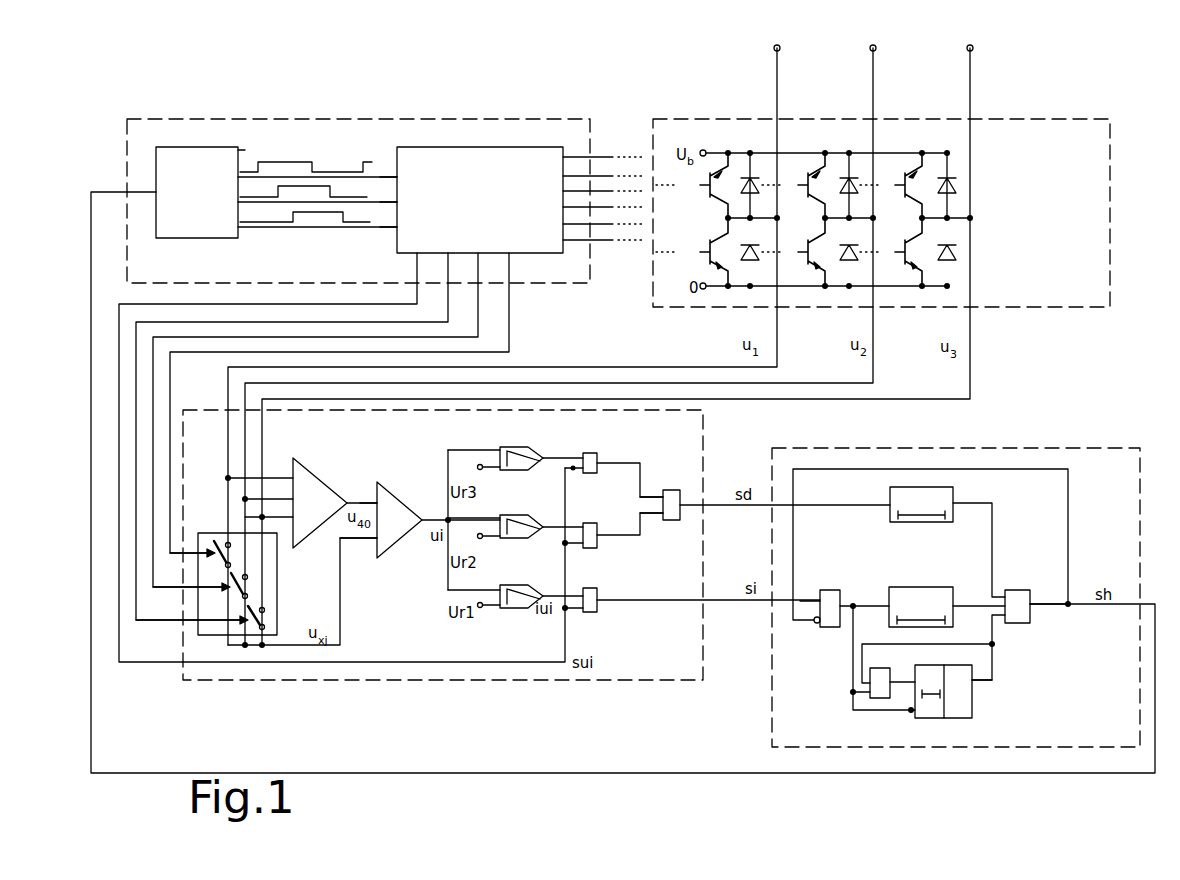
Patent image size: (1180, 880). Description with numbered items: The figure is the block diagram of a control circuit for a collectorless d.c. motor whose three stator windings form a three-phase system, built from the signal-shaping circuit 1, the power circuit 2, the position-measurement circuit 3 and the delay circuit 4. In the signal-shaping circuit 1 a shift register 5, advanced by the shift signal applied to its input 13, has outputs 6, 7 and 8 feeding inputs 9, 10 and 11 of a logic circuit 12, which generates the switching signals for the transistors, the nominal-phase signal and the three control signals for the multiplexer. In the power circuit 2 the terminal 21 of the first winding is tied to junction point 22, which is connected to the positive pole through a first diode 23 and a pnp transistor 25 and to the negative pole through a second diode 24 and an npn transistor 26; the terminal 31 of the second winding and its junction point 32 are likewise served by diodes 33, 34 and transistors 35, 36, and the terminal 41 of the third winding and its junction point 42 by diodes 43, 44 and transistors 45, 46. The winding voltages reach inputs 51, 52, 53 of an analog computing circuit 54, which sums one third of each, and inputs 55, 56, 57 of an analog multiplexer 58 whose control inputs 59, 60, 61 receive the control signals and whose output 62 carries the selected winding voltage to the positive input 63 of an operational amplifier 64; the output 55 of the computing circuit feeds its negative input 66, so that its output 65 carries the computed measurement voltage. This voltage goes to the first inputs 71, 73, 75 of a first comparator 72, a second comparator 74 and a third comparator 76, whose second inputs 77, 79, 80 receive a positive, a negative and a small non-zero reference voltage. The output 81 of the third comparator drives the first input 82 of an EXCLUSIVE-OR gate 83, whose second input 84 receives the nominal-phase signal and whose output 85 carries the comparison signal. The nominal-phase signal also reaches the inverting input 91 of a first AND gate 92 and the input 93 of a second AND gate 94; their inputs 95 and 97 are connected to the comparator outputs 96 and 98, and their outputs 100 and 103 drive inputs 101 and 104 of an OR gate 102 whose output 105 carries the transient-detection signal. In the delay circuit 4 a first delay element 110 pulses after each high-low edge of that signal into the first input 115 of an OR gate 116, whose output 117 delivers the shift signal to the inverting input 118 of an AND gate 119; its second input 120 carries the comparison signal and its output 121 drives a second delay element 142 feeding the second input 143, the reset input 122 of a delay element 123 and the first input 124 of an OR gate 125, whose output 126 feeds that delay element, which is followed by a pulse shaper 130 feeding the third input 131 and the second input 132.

The signal-shaping circuit 1 is at (590, 119).
The power circuit 2 is at (1110, 119).
The position-measurement circuit 3 is at (703, 410).
The delay circuit 4 is at (1140, 448).
The shift register 5 is at (238, 150).
The output of shift register 6 is at (240, 176).
The output of shift register 7 is at (240, 201).
The output of shift register 8 is at (240, 226).
The input of logic circuit 9 is at (388, 177).
The input of logic circuit 10 is at (388, 202).
The input of logic circuit 11 is at (388, 227).
The logic circuit 12 is at (540, 147).
The input of shift register 13 is at (156, 192).
The terminal of first winding 21 is at (780, 48).
The junction point 22 is at (753, 208).
The first diode 23 is at (760, 185).
The second diode 24 is at (759, 255).
The pnp transistor 25 is at (710, 194).
The npn transistor 26 is at (710, 262).
The terminal of second winding 31 is at (876, 48).
The junction point 32 is at (850, 208).
The diode 33 is at (858, 185).
The diode 34 is at (858, 255).
The pnp transistor 35 is at (808, 194).
The npn transistor 36 is at (803, 286).
The terminal of third winding 41 is at (973, 48).
The center tap 42 is at (948, 228).
The diode 43 is at (956, 185).
The diode 44 is at (956, 255).
The pnp transistor 45 is at (906, 176).
The npn transistor 46 is at (905, 243).
The input of analog computing circuit 51 is at (286, 478).
The input of analog computing circuit 52 is at (286, 499).
The input of analog computing circuit 53 is at (286, 517).
The analog computing circuit 54 is at (308, 470).
The output of analog computing circuit 55 is at (352, 503).
The input of analog multiplexer 56 is at (245, 517).
The input of analog multiplexer 57 is at (277, 560).
The analog multiplexer 58 is at (277, 590).
The input of analog multiplexer 59 is at (190, 553).
The input of analog multiplexer 60 is at (190, 587).
The input of analog multiplexer 61 is at (190, 620).
The output of analog multiplexer 62 is at (277, 618).
The positive input of operational amplifier 63 is at (360, 545).
The operational amplifier 64 is at (410, 478).
The output of operational amplifier 65 is at (435, 515).
The negative input of operational amplifier 66 is at (372, 492).
The first input of first comparator 71 is at (482, 450).
The first comparator 72 is at (538, 438).
The first input of second comparator 73 is at (482, 518).
The second comparator 74 is at (538, 506).
The first input of third comparator 75 is at (482, 590).
The third comparator 76 is at (538, 576).
The second input of first comparator 77 is at (482, 470).
The second input of second comparator 79 is at (482, 539).
The second input of third comparator 80 is at (482, 608).
The output of third comparator 81 is at (556, 596).
The first input of EXCLUSIVE-OR gate 82 is at (568, 592).
The EXCLUSIVE-OR logic gate 83 is at (597, 588).
The second input of EXCLUSIVE-OR gate 84 is at (568, 611).
The output of EXCLUSIVE-OR gate 85 is at (605, 604).
The inverting first input of first AND gate 91 is at (573, 471).
The first AND gate 92 is at (597, 453).
The first input of second AND gate 93 is at (568, 546).
The second AND gate 94 is at (597, 523).
The first input of first AND gate 95 is at (575, 460).
The output of first comparator 96 is at (566, 452).
The second input of second AND gate 97 is at (565, 527).
The output of second comparator 98 is at (561, 545).
The output of first AND gate 100 is at (610, 463).
The first input of OR gate 101 is at (660, 484).
The OR gate 102 is at (680, 516).
The output of second AND gate 103 is at (605, 537).
The second input of OR gate 104 is at (652, 515).
The output of OR gate 105 is at (680, 495).
The first delay element 110 is at (953, 490).
The first input of OR gate 115 is at (998, 595).
The OR gate 116 is at (1030, 592).
The output of OR gate 117 is at (1035, 608).
The inverting input of AND gate 118 is at (812, 622).
The AND gate 119 is at (838, 581).
The second input of AND gate 120 is at (808, 592).
The output of AND gate 121 is at (846, 600).
The reset input of delay element 122 is at (905, 714).
The delay element 123 is at (930, 718).
The first input of OR gate 124 is at (855, 712).
The OR gate 125 is at (880, 668).
The output of OR gate 126 is at (902, 682).
The pulse shaper 130 is at (960, 718).
The third input of OR gate 131 is at (1000, 626).
The second input of OR gate 132 is at (850, 692).
The second delay element 142 is at (955, 583).
The second input of OR gate 143 is at (995, 598).